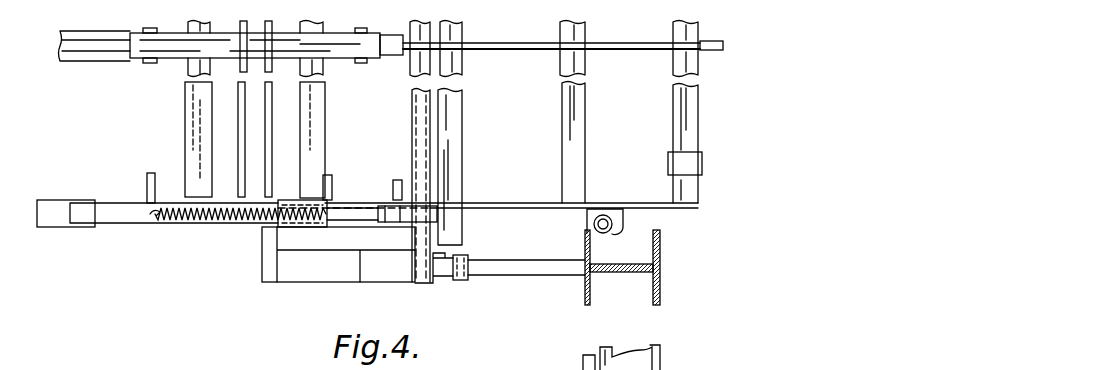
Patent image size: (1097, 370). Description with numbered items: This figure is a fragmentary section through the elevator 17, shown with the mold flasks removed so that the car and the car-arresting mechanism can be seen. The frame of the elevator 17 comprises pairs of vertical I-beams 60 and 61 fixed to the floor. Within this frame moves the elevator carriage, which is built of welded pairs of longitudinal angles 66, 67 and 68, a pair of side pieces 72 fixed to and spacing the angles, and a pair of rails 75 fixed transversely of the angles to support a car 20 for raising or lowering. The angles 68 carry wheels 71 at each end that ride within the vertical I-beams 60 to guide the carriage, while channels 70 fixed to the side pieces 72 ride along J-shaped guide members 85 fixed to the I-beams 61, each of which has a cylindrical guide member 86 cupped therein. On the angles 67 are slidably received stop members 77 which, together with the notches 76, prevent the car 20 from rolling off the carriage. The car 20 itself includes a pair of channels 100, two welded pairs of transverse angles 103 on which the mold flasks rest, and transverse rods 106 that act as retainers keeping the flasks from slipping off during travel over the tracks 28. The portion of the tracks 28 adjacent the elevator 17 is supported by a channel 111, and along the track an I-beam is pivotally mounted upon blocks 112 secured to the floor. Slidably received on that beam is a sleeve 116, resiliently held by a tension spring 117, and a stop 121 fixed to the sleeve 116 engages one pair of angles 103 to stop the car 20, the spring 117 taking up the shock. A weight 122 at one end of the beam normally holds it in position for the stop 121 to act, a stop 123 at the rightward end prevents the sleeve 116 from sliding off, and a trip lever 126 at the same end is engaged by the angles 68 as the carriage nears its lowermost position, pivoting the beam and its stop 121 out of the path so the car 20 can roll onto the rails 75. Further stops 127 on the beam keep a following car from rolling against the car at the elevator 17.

The tracks 28 is at (88, 58).
The channels 100 is at (172, 52).
The angles 103 is at (186, 27).
The car 20 is at (327, 97).
The rods 106 is at (240, 122).
The stops 127 is at (153, 188).
The stop 121 is at (330, 185).
The stop 123 is at (393, 190).
The trip lever 126 is at (388, 215).
The sleeve 116 is at (300, 220).
The tension spring 117 is at (240, 222).
The weight 122 is at (55, 222).
The blocks 112 is at (373, 275).
The channel 111 is at (425, 283).
The vertical I-beams 60 is at (433, 285).
The wheels 71 is at (455, 280).
The angles 68 is at (455, 138).
The side pieces 72 is at (518, 202).
The angles 66 is at (578, 138).
The angles 67 is at (678, 105).
The stop members 77 is at (692, 167).
The rails 75 is at (612, 45).
The notches 76 is at (712, 42).
The channels 70 is at (622, 216).
The cylindrical guide members 86 is at (612, 228).
The J-shaped guide members 85 is at (590, 248).
The vertical I-beams 61 is at (660, 285).
The elevator 17 is at (672, 220).